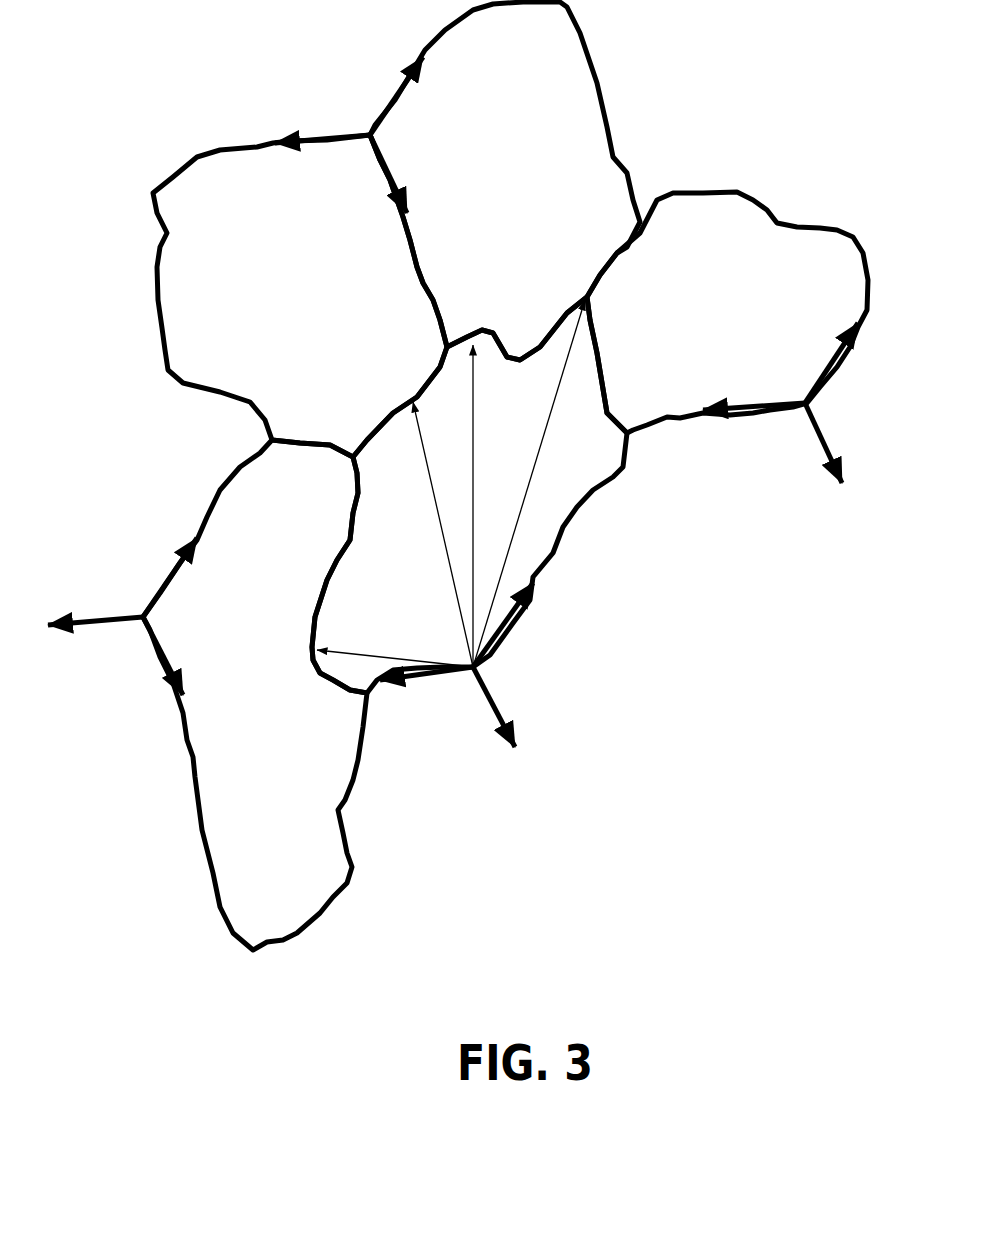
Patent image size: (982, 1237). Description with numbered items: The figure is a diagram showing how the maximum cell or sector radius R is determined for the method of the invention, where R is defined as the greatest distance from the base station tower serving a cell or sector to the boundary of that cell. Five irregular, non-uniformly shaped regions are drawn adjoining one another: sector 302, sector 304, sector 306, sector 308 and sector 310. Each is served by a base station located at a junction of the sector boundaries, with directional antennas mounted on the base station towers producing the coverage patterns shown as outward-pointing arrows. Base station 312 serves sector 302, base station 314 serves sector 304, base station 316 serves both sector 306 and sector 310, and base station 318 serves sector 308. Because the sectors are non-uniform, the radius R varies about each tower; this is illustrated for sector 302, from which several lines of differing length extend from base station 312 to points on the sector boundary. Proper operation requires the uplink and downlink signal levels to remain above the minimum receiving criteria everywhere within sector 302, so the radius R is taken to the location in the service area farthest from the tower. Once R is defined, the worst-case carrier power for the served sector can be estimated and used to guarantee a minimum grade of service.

The sector 302 is at (409, 627).
The sector 304 is at (273, 676).
The sector 306 is at (325, 319).
The sector 308 is at (754, 321).
The sector 310 is at (520, 199).
The base station 312 is at (480, 666).
The base station 314 is at (140, 615).
The base station 316 is at (365, 130).
The base station 318 is at (808, 404).